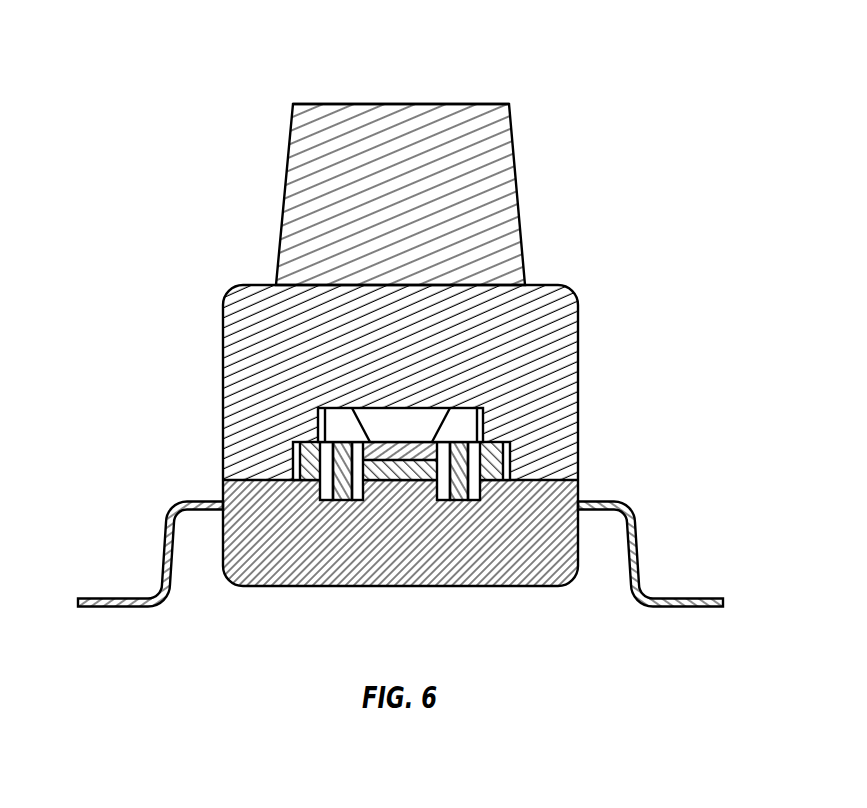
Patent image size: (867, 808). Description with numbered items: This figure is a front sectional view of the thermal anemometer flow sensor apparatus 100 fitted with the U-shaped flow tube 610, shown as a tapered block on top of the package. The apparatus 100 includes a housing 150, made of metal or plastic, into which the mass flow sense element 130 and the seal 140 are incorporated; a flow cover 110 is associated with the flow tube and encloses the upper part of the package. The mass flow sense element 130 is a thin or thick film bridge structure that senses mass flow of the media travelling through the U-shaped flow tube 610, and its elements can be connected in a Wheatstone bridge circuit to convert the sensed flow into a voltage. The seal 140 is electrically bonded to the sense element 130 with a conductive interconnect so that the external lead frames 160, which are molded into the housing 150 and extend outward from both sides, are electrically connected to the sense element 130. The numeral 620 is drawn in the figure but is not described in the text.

The thermal anemometer flow sensor apparatus 100 is at (160, 74).
The flow cover 110 is at (540, 293).
The mass flow sense element 130 is at (467, 420).
The seal 140 is at (475, 482).
The housing 150 is at (468, 575).
The lead frames 160 is at (680, 597).
The U-shaped flow tube 610 is at (326, 103).
The lens 620 is at (470, 82).